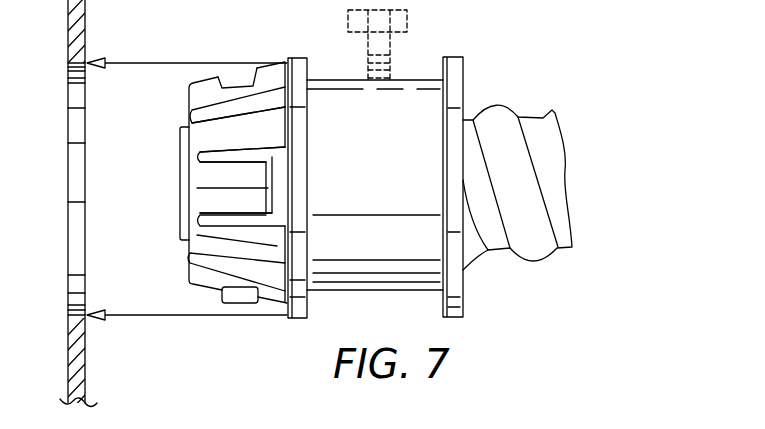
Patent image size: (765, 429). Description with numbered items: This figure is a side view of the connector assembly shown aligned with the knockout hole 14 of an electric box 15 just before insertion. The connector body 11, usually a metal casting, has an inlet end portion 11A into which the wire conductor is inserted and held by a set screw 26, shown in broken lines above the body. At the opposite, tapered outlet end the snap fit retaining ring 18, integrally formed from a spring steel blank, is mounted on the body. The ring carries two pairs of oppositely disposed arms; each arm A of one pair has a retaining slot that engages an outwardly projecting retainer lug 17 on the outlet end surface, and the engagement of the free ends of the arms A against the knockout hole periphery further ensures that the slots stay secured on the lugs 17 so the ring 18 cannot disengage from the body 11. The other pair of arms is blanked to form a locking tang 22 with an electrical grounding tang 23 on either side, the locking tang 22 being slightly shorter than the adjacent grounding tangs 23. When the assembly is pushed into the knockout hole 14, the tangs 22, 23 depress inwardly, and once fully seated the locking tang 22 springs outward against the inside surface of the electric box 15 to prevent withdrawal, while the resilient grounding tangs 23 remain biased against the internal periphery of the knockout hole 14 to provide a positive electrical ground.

The connector body 11 is at (398, 250).
The inlet end portion 11A is at (463, 296).
The knockout hole 14 is at (77, 285).
The electric box 15 is at (81, 378).
The retainer lug 17 is at (228, 80).
The snap fit retaining ring 18 is at (177, 279).
The locking tang 22 is at (228, 195).
The electrical grounding tang 23 is at (262, 133).
The set screw 26 is at (392, 65).
The arm A is at (270, 82).